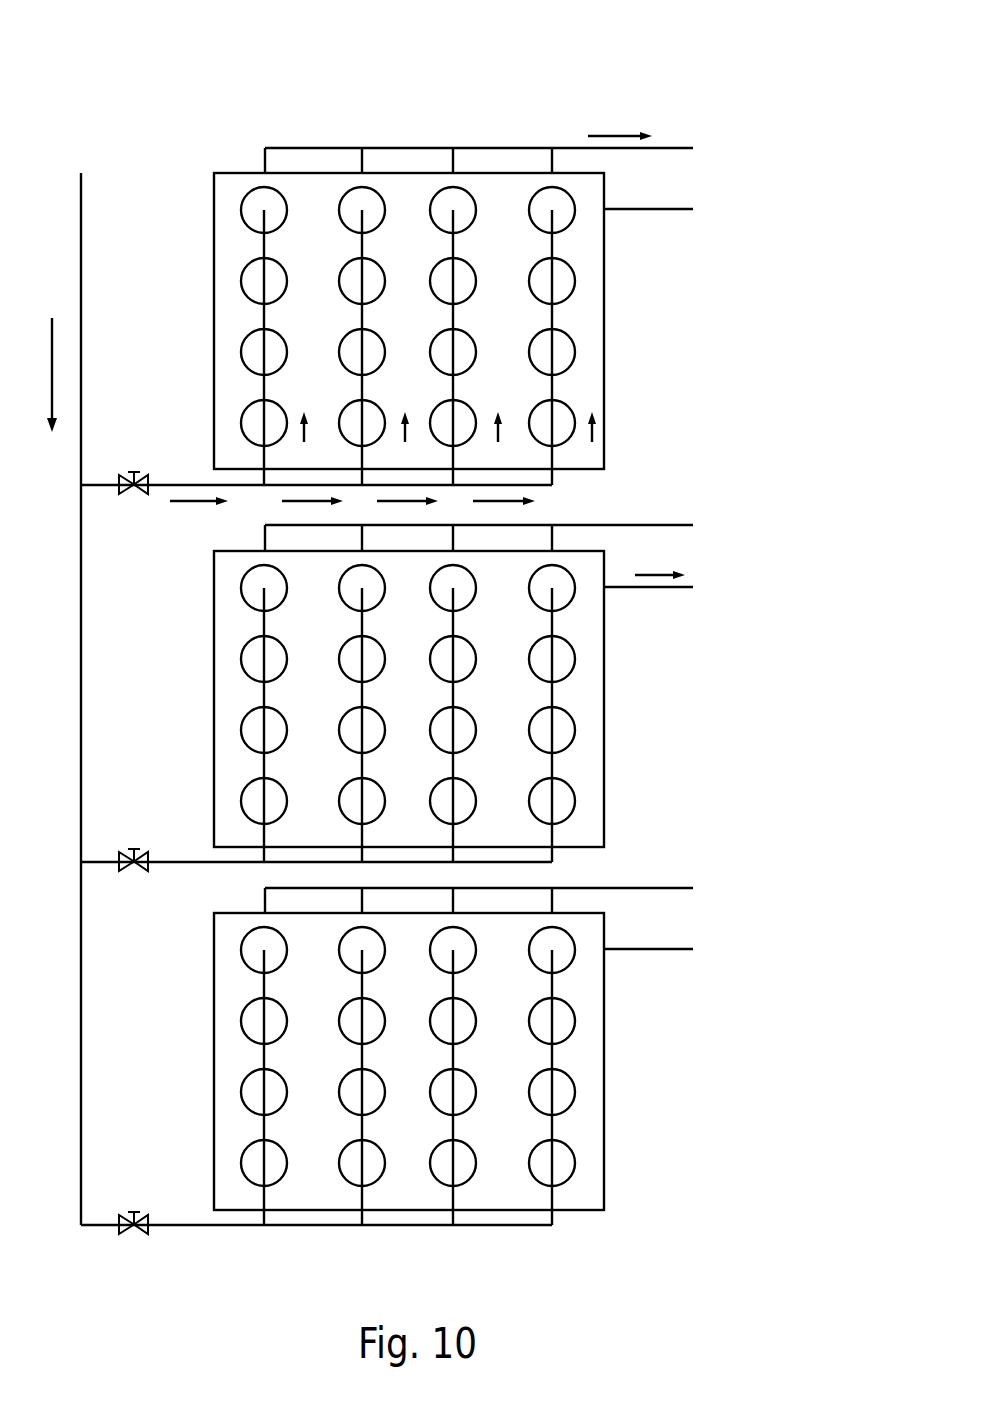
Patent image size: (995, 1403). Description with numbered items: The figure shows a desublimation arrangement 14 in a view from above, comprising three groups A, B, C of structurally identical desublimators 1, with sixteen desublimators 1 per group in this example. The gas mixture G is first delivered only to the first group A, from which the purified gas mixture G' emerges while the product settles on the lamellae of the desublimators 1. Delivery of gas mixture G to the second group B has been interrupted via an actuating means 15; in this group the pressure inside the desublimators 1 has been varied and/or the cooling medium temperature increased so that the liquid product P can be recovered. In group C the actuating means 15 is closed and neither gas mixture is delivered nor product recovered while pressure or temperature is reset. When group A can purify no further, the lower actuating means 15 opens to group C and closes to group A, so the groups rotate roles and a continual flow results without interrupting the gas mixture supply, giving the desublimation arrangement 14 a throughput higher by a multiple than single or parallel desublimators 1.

The desublimation arrangement 14 is at (413, 655).
The desublimator 1 is at (575, 208).
The actuating means 15 is at (138, 494).